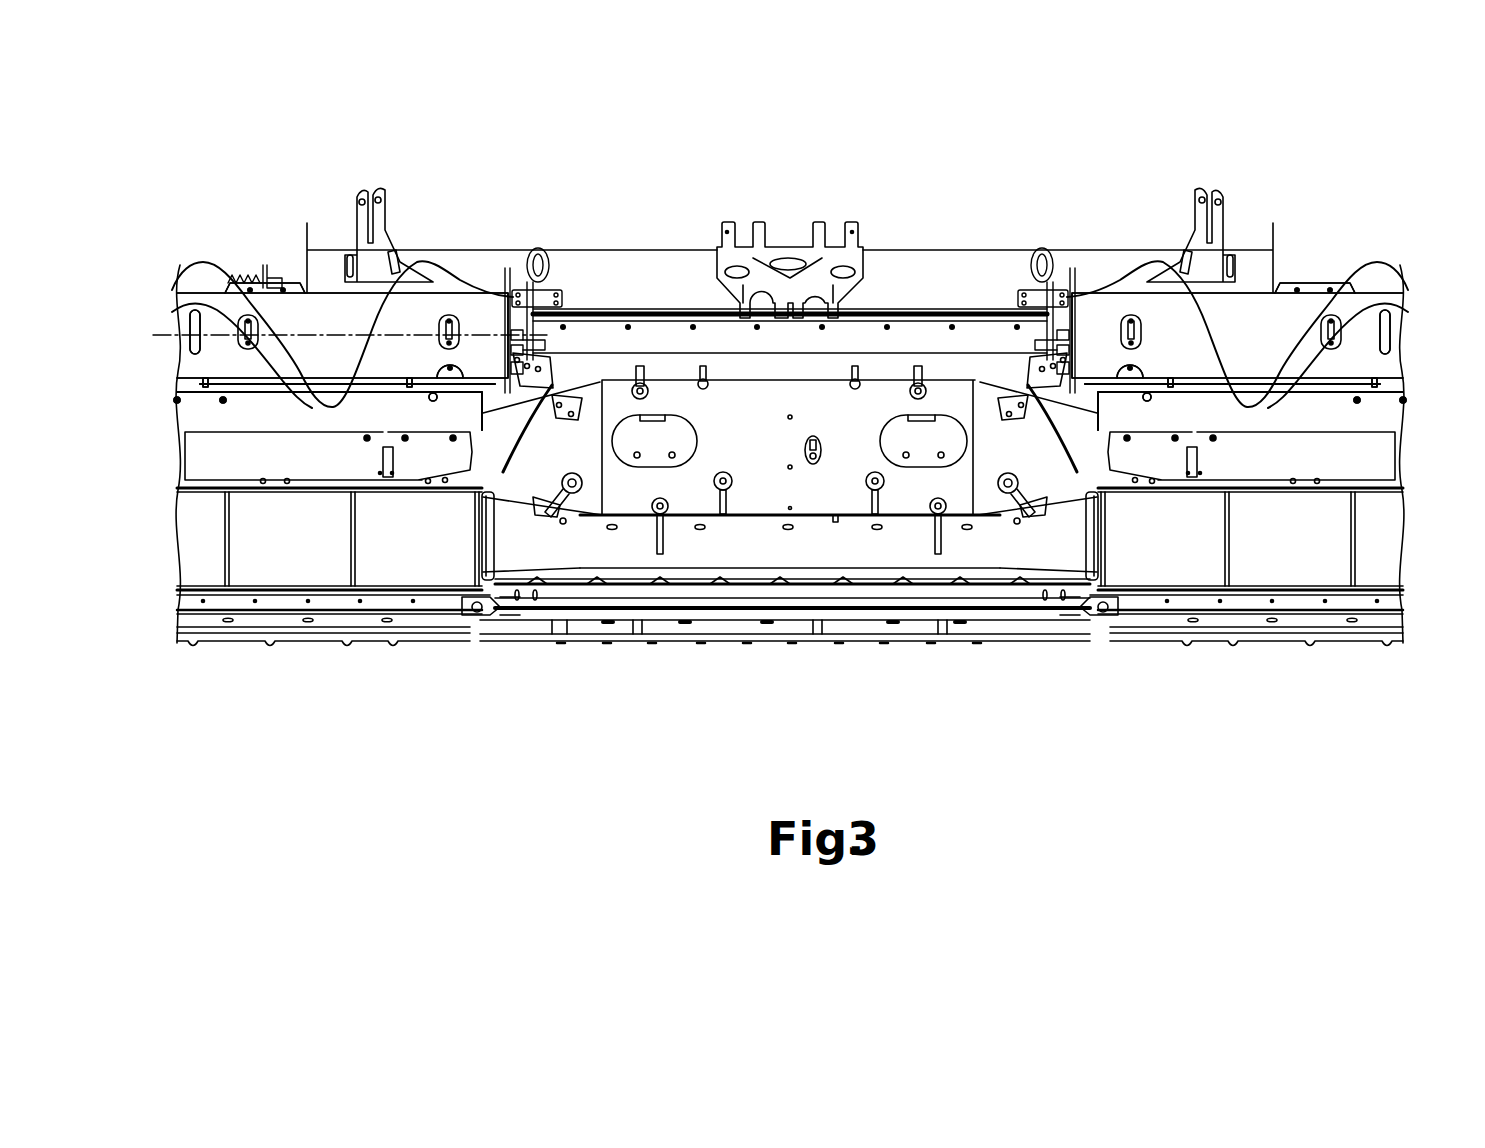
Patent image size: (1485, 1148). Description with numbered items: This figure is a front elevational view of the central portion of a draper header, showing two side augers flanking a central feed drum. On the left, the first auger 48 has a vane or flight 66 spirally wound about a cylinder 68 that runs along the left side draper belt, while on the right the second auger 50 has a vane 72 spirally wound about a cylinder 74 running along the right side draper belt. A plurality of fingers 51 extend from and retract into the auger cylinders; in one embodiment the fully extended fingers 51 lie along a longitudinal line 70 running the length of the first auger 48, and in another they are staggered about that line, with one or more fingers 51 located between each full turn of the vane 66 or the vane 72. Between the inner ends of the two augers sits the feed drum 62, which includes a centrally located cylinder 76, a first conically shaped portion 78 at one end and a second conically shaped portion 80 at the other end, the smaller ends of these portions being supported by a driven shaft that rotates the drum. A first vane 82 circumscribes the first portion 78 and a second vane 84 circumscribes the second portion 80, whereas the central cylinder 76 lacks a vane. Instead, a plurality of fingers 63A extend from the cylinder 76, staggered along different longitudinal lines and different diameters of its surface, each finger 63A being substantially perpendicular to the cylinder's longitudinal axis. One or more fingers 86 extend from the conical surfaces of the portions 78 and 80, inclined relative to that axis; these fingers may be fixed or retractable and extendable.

The first auger 48 is at (448, 316).
The second auger 50 is at (1104, 314).
The fingers 51 is at (245, 328).
The feed drum 62 is at (775, 477).
The fingers 63A is at (639, 380).
The vane 66 is at (425, 313).
The cylinder 68 is at (293, 315).
The longitudinal line 70 is at (223, 337).
The vane 72 is at (1155, 273).
The cylinder 74 is at (1290, 327).
The cylinder 76 is at (803, 410).
The first conically shaped portion 78 is at (589, 500).
The second conically shaped portion 80 is at (1050, 465).
The first vane 82 is at (543, 410).
The second vane 84 is at (1032, 365).
The fingers 86 is at (568, 500).